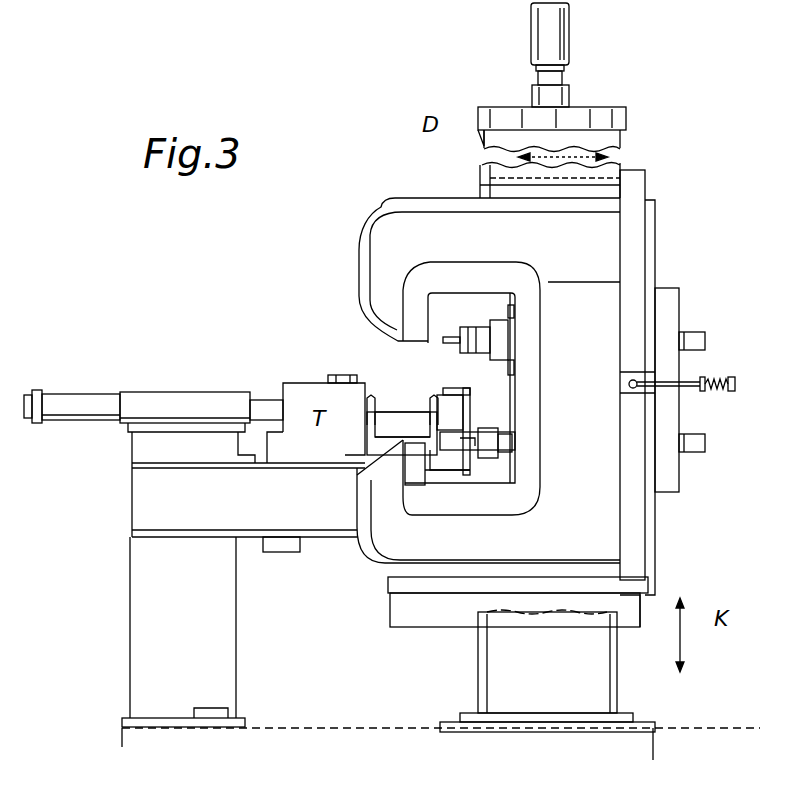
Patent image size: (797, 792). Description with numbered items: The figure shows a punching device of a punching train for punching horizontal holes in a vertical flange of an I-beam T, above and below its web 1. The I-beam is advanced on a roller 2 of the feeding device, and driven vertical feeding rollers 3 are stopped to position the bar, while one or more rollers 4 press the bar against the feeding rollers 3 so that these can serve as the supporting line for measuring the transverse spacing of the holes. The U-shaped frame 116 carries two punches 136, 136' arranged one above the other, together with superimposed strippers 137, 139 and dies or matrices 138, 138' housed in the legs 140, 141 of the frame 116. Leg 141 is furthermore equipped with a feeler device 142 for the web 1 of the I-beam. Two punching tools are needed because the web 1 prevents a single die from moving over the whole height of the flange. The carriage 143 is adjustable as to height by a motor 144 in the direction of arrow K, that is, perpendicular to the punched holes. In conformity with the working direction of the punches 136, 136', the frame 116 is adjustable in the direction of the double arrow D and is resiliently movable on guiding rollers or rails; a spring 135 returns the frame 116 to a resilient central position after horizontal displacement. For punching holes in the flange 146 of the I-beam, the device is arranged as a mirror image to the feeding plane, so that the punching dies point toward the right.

The web 1 is at (391, 411).
The roller 2 is at (360, 447).
The vertical feeding rollers 3 is at (488, 417).
The rollers 4 is at (190, 387).
The U-shaped frame 116 is at (423, 225).
The spring 135 is at (718, 393).
The punch 136 is at (465, 311).
The stripper 137 is at (496, 302).
The die 138 is at (307, 291).
The stripper 139 is at (603, 398).
The leg 140 is at (292, 249).
The leg 141 is at (441, 596).
The feeler device 142 is at (405, 410).
The carriage 143 is at (547, 671).
The motor 144 is at (493, 55).
The flange 146 is at (356, 415).
The die 138' is at (437, 451).
The punch 136' is at (478, 473).